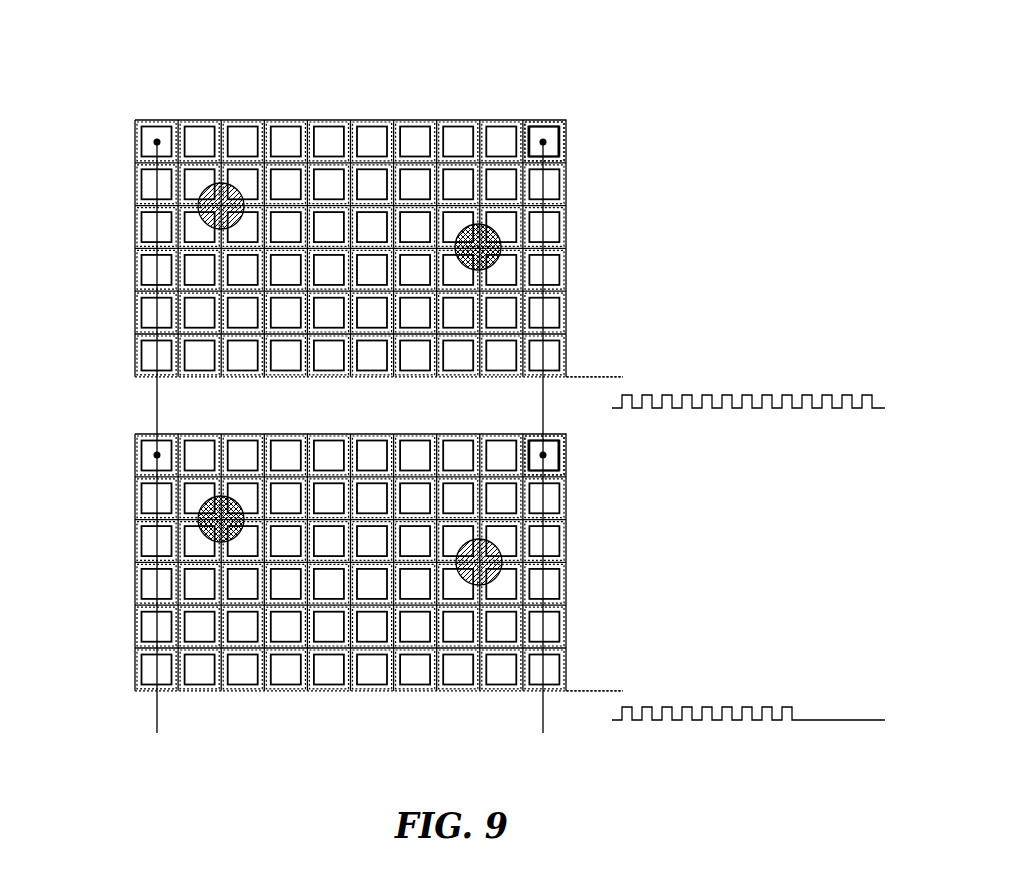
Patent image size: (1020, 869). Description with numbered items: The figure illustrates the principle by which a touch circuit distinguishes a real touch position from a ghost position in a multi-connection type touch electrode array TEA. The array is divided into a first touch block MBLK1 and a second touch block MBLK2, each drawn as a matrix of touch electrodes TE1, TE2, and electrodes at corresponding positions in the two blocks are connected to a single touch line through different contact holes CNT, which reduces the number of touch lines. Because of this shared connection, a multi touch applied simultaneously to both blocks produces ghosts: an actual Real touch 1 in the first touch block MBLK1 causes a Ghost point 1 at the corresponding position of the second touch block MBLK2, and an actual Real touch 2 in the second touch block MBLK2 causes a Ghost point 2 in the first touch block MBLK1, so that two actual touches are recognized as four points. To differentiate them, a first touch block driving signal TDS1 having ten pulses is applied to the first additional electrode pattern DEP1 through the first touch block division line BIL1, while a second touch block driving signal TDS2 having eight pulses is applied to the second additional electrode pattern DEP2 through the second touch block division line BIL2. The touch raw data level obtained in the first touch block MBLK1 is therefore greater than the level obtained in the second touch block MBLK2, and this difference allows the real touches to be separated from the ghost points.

The touch electrode array TEA is at (150, 68).
The first touch block MBLK1 is at (348, 245).
The second touch block MBLK2 is at (348, 559).
The touch electrode TE1 is at (567, 180).
The touch electrode TE2 is at (567, 494).
The first additional electrode pattern DEP1 is at (567, 124).
The second additional electrode pattern DEP2 is at (567, 437).
The contact hole CNT is at (543, 138).
The first touch block division line BIL1 is at (594, 362).
The second touch block division line BIL2 is at (594, 676).
The first touch block driving signal TDS1 is at (748, 417).
The second touch block driving signal TDS2 is at (748, 730).
The real touch Real touch 1 is at (212, 226).
The real touch Real touch 2 is at (498, 548).
The ghost point Ghost point 1 is at (208, 538).
The ghost point Ghost point 2 is at (496, 240).